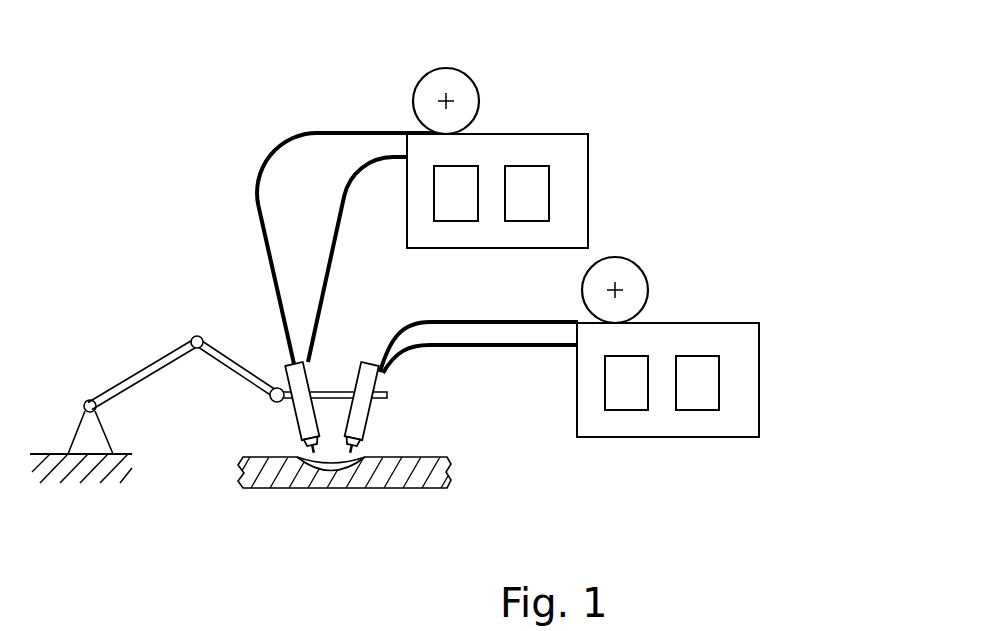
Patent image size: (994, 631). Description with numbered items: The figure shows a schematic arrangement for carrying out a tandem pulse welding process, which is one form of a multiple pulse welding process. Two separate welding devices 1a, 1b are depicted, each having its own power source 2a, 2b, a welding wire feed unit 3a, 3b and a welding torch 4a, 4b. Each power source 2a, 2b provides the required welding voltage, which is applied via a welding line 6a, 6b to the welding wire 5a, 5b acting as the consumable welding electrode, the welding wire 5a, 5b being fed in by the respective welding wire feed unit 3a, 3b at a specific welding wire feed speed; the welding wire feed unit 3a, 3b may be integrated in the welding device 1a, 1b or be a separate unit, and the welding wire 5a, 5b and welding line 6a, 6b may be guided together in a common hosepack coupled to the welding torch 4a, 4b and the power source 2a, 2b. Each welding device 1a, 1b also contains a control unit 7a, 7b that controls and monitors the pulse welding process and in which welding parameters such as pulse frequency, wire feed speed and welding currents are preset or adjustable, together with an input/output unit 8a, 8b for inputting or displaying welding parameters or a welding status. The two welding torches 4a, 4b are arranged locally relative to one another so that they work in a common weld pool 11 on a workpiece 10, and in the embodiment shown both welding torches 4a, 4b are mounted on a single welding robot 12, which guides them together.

The welding device 1a is at (613, 447).
The welding device 1b is at (633, 105).
The power source 2a is at (759, 380).
The power source 2b is at (588, 175).
The welding wire feed unit 3a is at (647, 277).
The welding wire feed unit 3b is at (470, 73).
The welding torch 4a is at (370, 422).
The welding torch 4b is at (295, 410).
The welding wire 5a is at (477, 321).
The welding wire 5b is at (258, 208).
The welding line 6a is at (507, 348).
The welding line 6b is at (333, 255).
The control unit 7a is at (698, 410).
The control unit 7b is at (525, 190).
The input/output unit 8a is at (627, 410).
The input/output unit 8b is at (452, 190).
The workpiece 10 is at (393, 470).
The weld pool 11 is at (332, 465).
The welding robot 12 is at (133, 372).